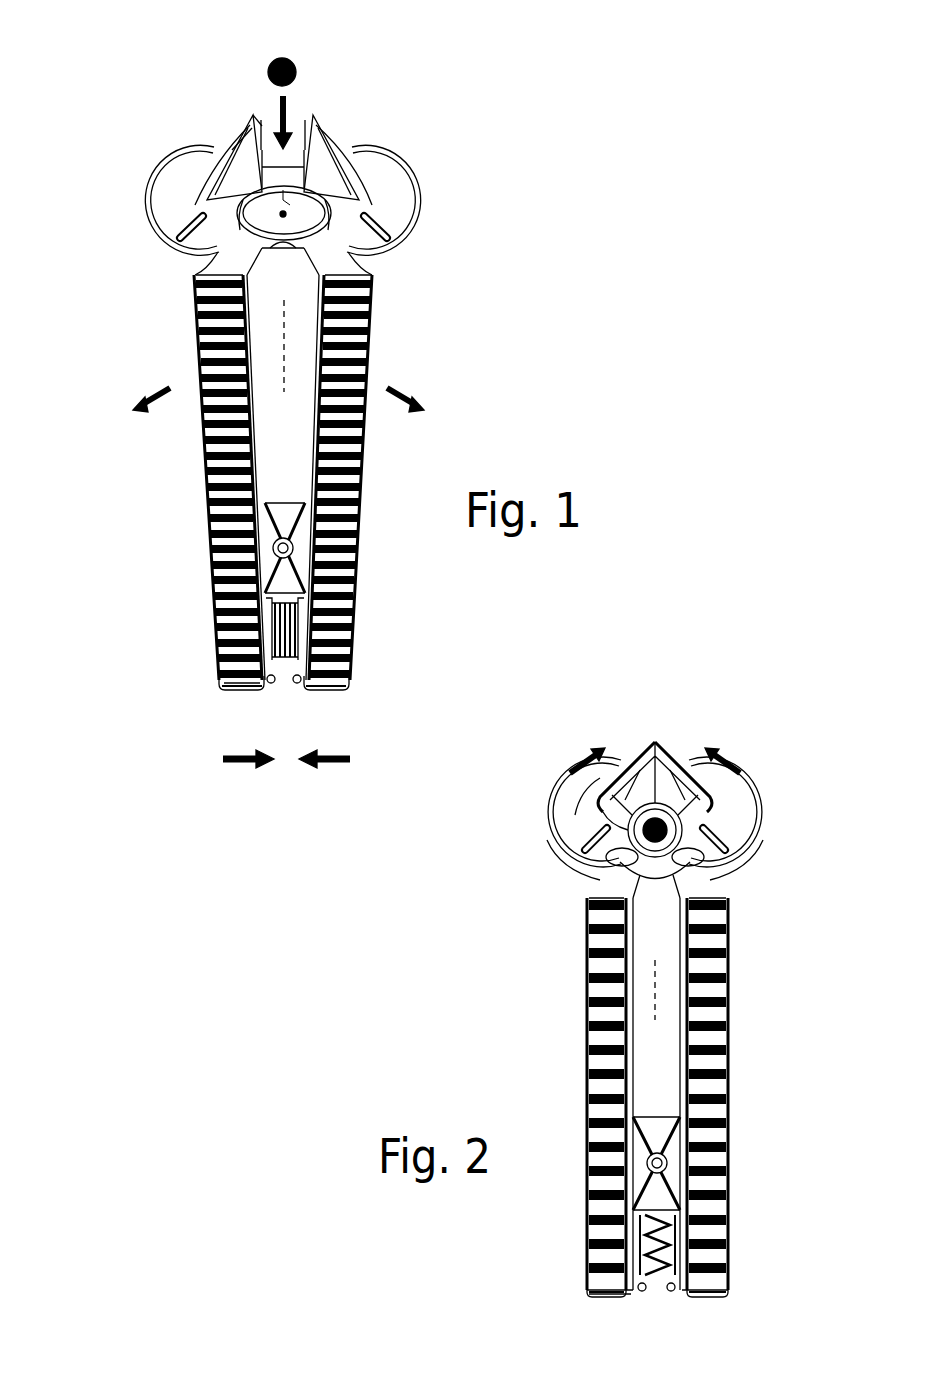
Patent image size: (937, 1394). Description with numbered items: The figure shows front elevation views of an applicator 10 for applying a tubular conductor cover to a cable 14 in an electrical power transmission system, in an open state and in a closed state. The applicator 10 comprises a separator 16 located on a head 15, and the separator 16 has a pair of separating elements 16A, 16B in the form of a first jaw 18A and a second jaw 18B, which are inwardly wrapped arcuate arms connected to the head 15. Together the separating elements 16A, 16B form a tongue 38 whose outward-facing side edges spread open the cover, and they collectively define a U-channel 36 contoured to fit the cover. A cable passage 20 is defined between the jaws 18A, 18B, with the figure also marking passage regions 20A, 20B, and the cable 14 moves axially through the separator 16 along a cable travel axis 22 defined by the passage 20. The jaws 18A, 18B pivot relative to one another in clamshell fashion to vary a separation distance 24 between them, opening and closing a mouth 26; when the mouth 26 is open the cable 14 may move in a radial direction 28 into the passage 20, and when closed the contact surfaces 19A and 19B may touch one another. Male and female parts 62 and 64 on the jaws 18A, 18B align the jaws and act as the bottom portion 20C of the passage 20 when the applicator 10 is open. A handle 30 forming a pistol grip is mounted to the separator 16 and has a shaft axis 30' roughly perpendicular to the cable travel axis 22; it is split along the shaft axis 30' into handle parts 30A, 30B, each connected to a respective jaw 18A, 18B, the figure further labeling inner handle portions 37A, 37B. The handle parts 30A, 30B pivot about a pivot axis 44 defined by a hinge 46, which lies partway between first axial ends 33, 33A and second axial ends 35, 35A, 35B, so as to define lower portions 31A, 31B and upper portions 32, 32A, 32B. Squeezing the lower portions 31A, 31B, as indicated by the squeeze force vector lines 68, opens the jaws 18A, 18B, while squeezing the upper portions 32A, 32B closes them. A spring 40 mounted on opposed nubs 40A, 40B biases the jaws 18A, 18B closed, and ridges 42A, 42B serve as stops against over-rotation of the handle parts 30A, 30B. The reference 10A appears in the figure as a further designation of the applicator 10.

In FIG. 1, the applicator 10 is at (90, 100).
In FIG. 2, the applicator 10 is at (548, 618).
In FIG. 1, the jaw assembly 10A is at (348, 134).
In FIG. 2, the jaw assembly 10A is at (673, 735).
In FIG. 1, the cable 14 is at (270, 62).
In FIG. 2, the cable 14 is at (693, 858).
In FIG. 1, the head 15 is at (124, 199).
In FIG. 2, the head 15 is at (524, 826).
In FIG. 1, the separator 16 is at (222, 131).
In FIG. 2, the separator 16 is at (663, 704).
In FIG. 1, the separating element 16A is at (327, 127).
In FIG. 2, the separating element 16A is at (690, 765).
In FIG. 1, the separating element 16B is at (235, 148).
In FIG. 2, the separating element 16B is at (612, 737).
In FIG. 1, the first jaw 18A is at (372, 140).
In FIG. 2, the first jaw 18A is at (690, 725).
In FIG. 1, the second jaw 18B is at (175, 165).
In FIG. 2, the second jaw 18B is at (612, 715).
In FIG. 1, the contact surface 19A is at (305, 125).
In FIG. 2, the contact surface 19A is at (668, 738).
In FIG. 1, the contact surface 19B is at (255, 122).
In FIG. 2, the contact surface 19B is at (660, 735).
In FIG. 1, the cable passage 20 is at (308, 208).
In FIG. 2, the cable passage 20 is at (600, 858).
In FIG. 1, the first socket half 20A is at (335, 230).
In FIG. 2, the first socket half 20A is at (680, 838).
In FIG. 1, the second socket half 20B is at (262, 238).
In FIG. 2, the second socket half 20B is at (622, 822).
In FIG. 1, the bottom portion 20C is at (284, 250).
In FIG. 1, the cable travel axis 22 is at (300, 186).
In FIG. 2, the cable travel axis 22 is at (668, 815).
In FIG. 1, the separation distance 24 is at (266, 170).
In FIG. 2, the separation distance 24 is at (672, 778).
In FIG. 1, the mouth 26 is at (262, 118).
In FIG. 2, the mouth 26 is at (652, 740).
In FIG. 1, the radial direction 28 is at (252, 112).
In FIG. 1, the handle 30 is at (335, 368).
In FIG. 2, the handle 30 is at (563, 1094).
In FIG. 1, the shaft axis 30' is at (284, 360).
In FIG. 2, the shaft axis 30' is at (723, 990).
In FIG. 1, the handle part 30A is at (353, 608).
In FIG. 2, the handle part 30A is at (729, 1200).
In FIG. 1, the handle part 30B is at (218, 620).
In FIG. 2, the handle part 30B is at (587, 1220).
In FIG. 1, the lower portion 31A is at (343, 673).
In FIG. 2, the lower portion 31A is at (727, 1280).
In FIG. 1, the lower portion 31B is at (222, 668).
In FIG. 2, the lower portion 31B is at (590, 1282).
In FIG. 2, the upper portions 32 is at (587, 948).
In FIG. 1, the upper portion 32A is at (375, 316).
In FIG. 2, the upper portion 32A is at (730, 933).
In FIG. 1, the upper portion 32B is at (198, 328).
In FIG. 2, the upper portion 32B is at (587, 922).
In FIG. 1, the first axial end 33 is at (240, 680).
In FIG. 2, the first axial end 33 is at (598, 1293).
In FIG. 1, the first axial end 33A is at (348, 676).
In FIG. 2, the first axial end 33A is at (727, 1292).
In FIG. 2, the second axial end 35 is at (655, 870).
In FIG. 1, the second axial end 35A is at (375, 276).
In FIG. 2, the second axial end 35A is at (720, 890).
In FIG. 1, the second axial end 35B is at (245, 270).
In FIG. 2, the second axial end 35B is at (595, 883).
In FIG. 2, the U-channel 36 is at (584, 789).
In FIG. 1, the first inner rail 37A is at (355, 510).
In FIG. 2, the first inner rail 37A is at (728, 1027).
In FIG. 1, the second inner rail 37B is at (210, 362).
In FIG. 2, the second inner rail 37B is at (587, 1028).
In FIG. 2, the tongue 38 is at (628, 720).
In FIG. 1, the spring 40 is at (302, 642).
In FIG. 2, the spring 40 is at (660, 1280).
In FIG. 1, the nub 40A is at (343, 640).
In FIG. 2, the nub 40A is at (683, 1255).
In FIG. 1, the nub 40B is at (262, 598).
In FIG. 2, the nub 40B is at (640, 1250).
In FIG. 1, the ridge 42A is at (294, 680).
In FIG. 2, the ridge 42A is at (690, 1285).
In FIG. 1, the ridge 42B is at (272, 680).
In FIG. 2, the ridge 42B is at (637, 1290).
In FIG. 1, the pivot axis 44 is at (291, 538).
In FIG. 2, the pivot axis 44 is at (664, 1160).
In FIG. 1, the hinge 46 is at (262, 508).
In FIG. 2, the hinge 46 is at (650, 1158).
In FIG. 1, the male part 62 is at (372, 268).
In FIG. 1, the female part 64 is at (205, 289).
In FIG. 1, the squeeze force vector lines 68 is at (245, 763).